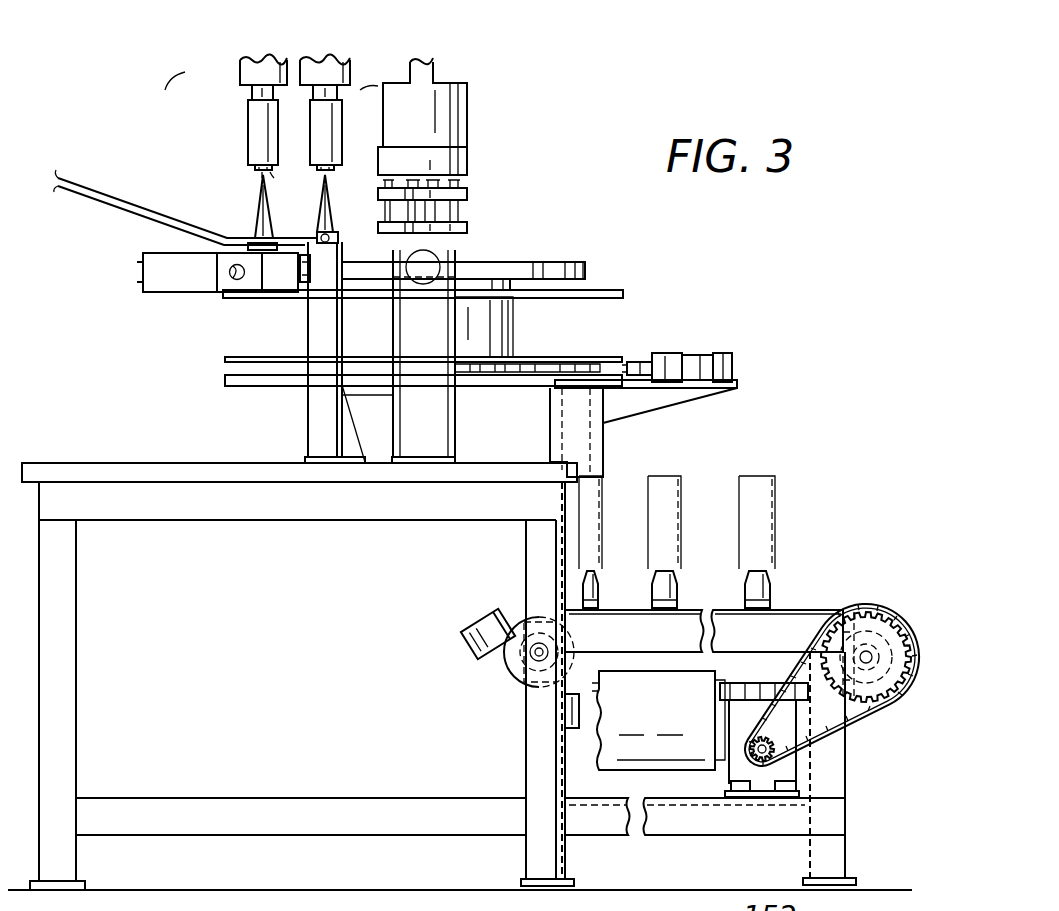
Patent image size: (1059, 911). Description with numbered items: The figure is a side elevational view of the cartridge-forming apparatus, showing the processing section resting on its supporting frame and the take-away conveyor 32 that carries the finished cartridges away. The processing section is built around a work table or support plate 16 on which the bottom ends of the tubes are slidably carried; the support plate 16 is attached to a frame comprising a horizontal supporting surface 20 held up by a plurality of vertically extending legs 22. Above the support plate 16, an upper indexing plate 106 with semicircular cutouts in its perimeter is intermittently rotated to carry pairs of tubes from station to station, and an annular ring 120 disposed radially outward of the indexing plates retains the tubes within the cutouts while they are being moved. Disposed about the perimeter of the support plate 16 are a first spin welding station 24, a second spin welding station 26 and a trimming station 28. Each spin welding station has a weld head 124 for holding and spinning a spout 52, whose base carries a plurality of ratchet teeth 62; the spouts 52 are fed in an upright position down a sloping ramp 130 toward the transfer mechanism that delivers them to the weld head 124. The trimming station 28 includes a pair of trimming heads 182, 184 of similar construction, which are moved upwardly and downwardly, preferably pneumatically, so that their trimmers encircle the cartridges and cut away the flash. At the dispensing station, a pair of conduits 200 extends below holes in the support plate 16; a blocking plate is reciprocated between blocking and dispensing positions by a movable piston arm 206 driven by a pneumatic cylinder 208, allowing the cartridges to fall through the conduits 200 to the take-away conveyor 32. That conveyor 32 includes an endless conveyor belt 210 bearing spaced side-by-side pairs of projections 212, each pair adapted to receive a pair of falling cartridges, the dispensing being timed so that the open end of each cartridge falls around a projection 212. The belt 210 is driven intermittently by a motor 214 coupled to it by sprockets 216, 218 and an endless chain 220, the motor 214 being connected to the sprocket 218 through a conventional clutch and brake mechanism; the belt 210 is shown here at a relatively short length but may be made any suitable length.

The support plate 16 is at (226, 380).
The horizontal supporting surface 20 is at (125, 472).
The vertically extending legs 22 is at (73, 655).
The first spin welding station 24 is at (215, 73).
The second spin welding station 26 is at (357, 89).
The trimming station 28 is at (470, 90).
The take-away conveyor 32 is at (852, 513).
The spout 52 is at (257, 205).
The ratchet teeth 62 is at (275, 175).
The upper indexing plate 106 is at (583, 263).
The annular ring 120 is at (606, 290).
The weld head 124 is at (250, 133).
The ramp 130 is at (150, 213).
The trimming head 182 is at (467, 225).
The trimming head 184 is at (467, 193).
The conduits 200 is at (598, 452).
The movable piston arm 206 is at (628, 357).
The pneumatic cylinder 208 is at (722, 362).
The endless conveyor belt 210 is at (516, 624).
The projections 212 is at (467, 628).
The motor 214 is at (679, 704).
The sprocket 216 is at (887, 686).
The sprocket 218 is at (764, 763).
The endless chain 220 is at (893, 606).